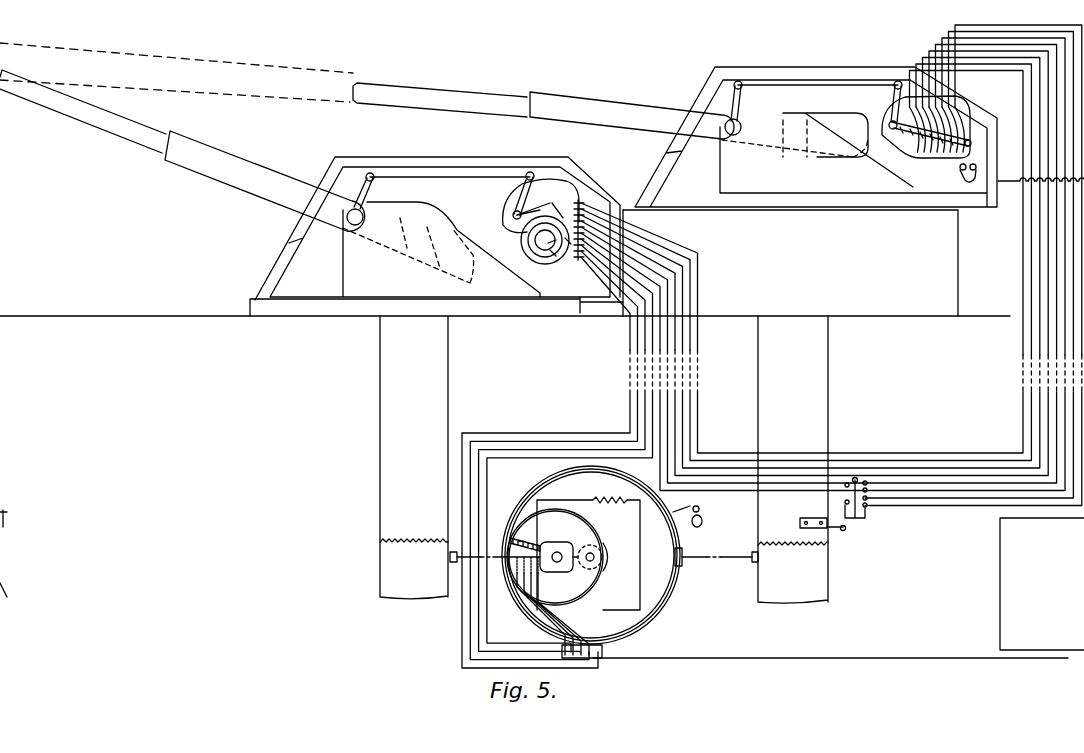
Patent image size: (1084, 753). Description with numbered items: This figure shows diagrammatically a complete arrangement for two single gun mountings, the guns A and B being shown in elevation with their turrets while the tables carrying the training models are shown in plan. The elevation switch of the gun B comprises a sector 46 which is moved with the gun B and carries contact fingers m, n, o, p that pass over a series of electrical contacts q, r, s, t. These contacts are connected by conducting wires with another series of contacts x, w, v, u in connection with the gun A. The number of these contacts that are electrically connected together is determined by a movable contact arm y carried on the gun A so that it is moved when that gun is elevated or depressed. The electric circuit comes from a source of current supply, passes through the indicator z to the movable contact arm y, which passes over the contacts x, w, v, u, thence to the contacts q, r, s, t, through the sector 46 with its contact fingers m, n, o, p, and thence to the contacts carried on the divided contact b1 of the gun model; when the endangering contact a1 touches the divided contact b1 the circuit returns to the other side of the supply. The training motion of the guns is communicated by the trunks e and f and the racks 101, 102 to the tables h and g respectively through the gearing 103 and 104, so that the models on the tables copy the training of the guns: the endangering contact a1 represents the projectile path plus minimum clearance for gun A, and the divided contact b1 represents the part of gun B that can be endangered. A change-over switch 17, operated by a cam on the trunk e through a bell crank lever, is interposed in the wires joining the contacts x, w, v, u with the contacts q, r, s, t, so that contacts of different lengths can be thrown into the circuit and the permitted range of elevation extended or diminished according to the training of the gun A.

The sector 46 is at (577, 198).
The change-over switch 17 is at (872, 512).
The rack 101 is at (807, 552).
The rack 102 is at (400, 548).
The gearing 103 is at (703, 552).
The gearing 104 is at (463, 573).
The gun A is at (370, 91).
The gun B is at (182, 150).
The trunk e is at (793, 459).
The trunk f is at (414, 457).
The electrical contact t is at (580, 225).
The contact u is at (928, 142).
The contact v is at (942, 150).
The contact w is at (955, 152).
The contact x is at (960, 150).
The movable contact arm y is at (900, 193).
The indicator z is at (963, 172).
The contact finger p is at (523, 215).
The contact finger o is at (550, 232).
The contact finger n is at (547, 240).
The contact finger m is at (543, 248).
The electrical contact q is at (553, 242).
The electrical contact r is at (552, 253).
The electrical contact s is at (568, 240).
The table g is at (691, 511).
The table h is at (600, 546).
The pivot c is at (603, 557).
The armature a is at (605, 566).
The brush springs b is at (572, 565).
The divided contact b1 is at (515, 540).
The endangering contact a1 is at (532, 546).